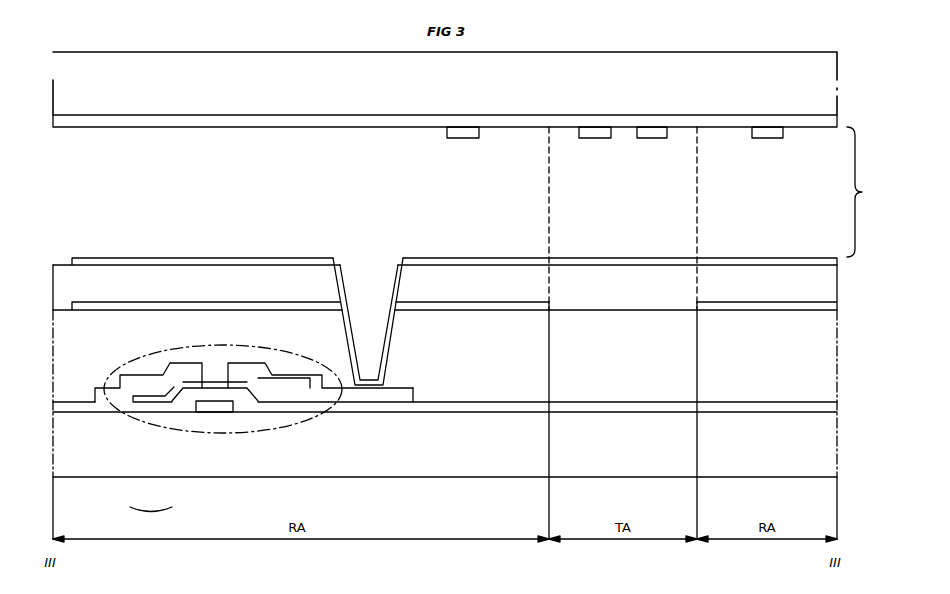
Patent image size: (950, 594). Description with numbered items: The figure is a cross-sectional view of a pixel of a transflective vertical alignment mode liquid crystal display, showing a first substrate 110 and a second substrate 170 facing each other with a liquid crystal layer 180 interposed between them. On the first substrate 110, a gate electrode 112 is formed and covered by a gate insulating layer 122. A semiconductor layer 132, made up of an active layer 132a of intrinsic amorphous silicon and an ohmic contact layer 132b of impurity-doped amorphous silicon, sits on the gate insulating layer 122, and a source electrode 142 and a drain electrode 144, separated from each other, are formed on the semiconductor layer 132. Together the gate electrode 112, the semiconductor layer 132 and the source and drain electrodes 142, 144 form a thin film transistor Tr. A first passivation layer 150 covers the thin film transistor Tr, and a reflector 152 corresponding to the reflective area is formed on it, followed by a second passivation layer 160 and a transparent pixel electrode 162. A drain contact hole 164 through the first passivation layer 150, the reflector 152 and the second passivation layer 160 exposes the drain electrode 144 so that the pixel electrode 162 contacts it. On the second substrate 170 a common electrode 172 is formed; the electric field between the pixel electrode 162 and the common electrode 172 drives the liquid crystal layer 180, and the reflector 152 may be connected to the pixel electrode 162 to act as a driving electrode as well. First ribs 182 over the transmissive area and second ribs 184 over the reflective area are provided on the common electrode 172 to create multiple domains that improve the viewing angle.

The first substrate 110 is at (445, 424).
The gate electrode 112 is at (220, 412).
The gate insulating layer 122 is at (428, 410).
The semiconductor layer 132 is at (151, 519).
The active layer 132a is at (143, 396).
The ohmic contact layer 132b is at (160, 392).
The source electrode 142 is at (173, 368).
The drain electrode 144 is at (248, 367).
The first passivation layer 150 is at (590, 395).
The reflector 152 is at (735, 303).
The second passivation layer 160 is at (648, 275).
The pixel electrode 162 is at (530, 259).
The drain contact hole 164 is at (361, 268).
The second substrate 170 is at (445, 83).
The common electrode 172 is at (288, 121).
The liquid crystal layer 180 is at (868, 192).
The first ribs 182 is at (650, 140).
The second ribs 184 is at (462, 140).
The thin film transistor Tr is at (277, 430).